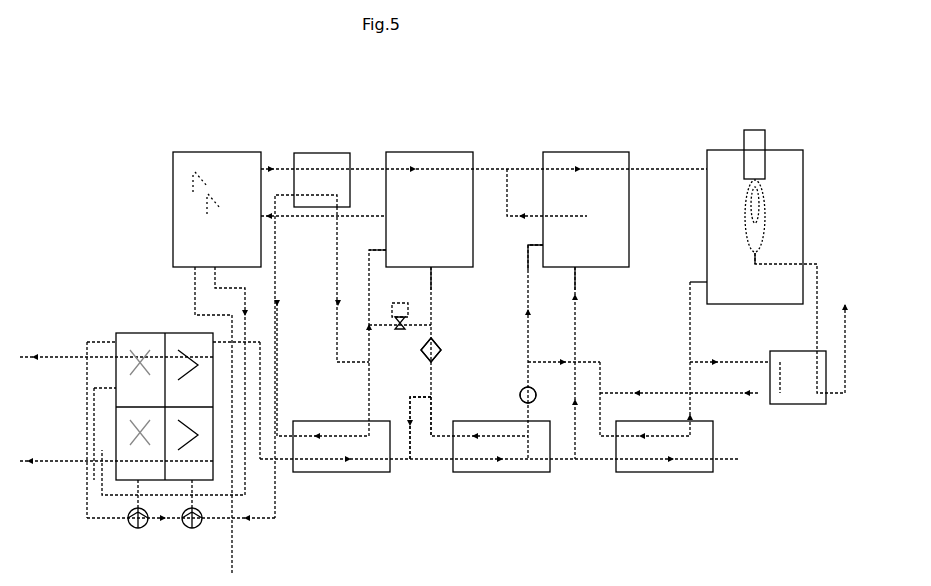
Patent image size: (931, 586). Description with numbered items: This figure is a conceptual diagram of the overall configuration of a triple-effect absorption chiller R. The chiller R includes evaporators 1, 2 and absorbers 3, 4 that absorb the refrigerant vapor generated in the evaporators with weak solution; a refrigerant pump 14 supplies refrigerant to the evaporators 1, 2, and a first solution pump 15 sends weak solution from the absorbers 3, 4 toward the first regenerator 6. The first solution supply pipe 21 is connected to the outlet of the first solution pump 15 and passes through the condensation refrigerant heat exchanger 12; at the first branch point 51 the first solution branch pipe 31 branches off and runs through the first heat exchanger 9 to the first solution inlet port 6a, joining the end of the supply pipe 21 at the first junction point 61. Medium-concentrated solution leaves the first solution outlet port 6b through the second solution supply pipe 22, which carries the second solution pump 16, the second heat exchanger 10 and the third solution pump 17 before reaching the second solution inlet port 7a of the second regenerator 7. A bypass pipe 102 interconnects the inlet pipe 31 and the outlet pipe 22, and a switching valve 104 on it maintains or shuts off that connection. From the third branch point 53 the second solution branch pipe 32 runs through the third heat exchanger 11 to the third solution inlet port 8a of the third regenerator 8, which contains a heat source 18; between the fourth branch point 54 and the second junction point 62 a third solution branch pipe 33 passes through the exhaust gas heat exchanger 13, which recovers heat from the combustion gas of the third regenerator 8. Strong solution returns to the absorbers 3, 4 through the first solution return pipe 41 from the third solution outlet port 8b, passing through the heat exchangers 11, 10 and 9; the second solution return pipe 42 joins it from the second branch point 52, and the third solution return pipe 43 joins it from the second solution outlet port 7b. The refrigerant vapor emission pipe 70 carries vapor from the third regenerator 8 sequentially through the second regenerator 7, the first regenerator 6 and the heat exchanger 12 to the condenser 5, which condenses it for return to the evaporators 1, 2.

The evaporator 1 is at (112, 334).
The evaporator 2 is at (120, 468).
The absorber 3 is at (174, 336).
The absorber 4 is at (225, 505).
The condenser 5 is at (185, 146).
The first regenerator 6 is at (399, 146).
The second regenerator 7 is at (555, 146).
The third regenerator 8 is at (727, 144).
The first heat exchanger 9 is at (358, 473).
The second heat exchanger 10 is at (518, 473).
The third heat exchanger 11 is at (684, 473).
The condensation refrigerant heat exchanger 12 is at (300, 146).
The exhaust gas heat exchanger 13 is at (790, 404).
The refrigerant pump 14 is at (125, 526).
The first solution pump 15 is at (185, 527).
The second solution pump 16 is at (441, 350).
The third solution pump 17 is at (518, 402).
The heat source 18 is at (760, 129).
The first solution supply pipe 21 is at (330, 292).
The second solution supply pipe 22 is at (528, 300).
The first solution branch pipe 31 is at (366, 290).
The second solution branch pipe 32 is at (564, 362).
The third solution branch pipe 33 is at (735, 395).
The first solution return pipe 41 is at (410, 460).
The second solution return pipe 42 is at (408, 410).
The third solution return pipe 43 is at (576, 360).
The first branch point 51 is at (280, 412).
The second branch point 52 is at (435, 398).
The third branch point 53 is at (526, 358).
The fourth branch point 54 is at (600, 392).
The first junction point 61 is at (368, 358).
The second junction point 62 is at (690, 366).
The refrigerant vapor emission pipe 70 is at (363, 169).
The first solution inlet port 6a is at (385, 250).
The first solution outlet port 6b is at (432, 270).
The second solution inlet port 7a is at (542, 254).
The second solution outlet port 7b is at (580, 268).
The third solution inlet port 8a is at (698, 282).
The third solution outlet port 8b is at (732, 306).
The bypass pipe 102 is at (423, 336).
The switching valve 104 is at (400, 303).
The absorption chiller R is at (140, 331).